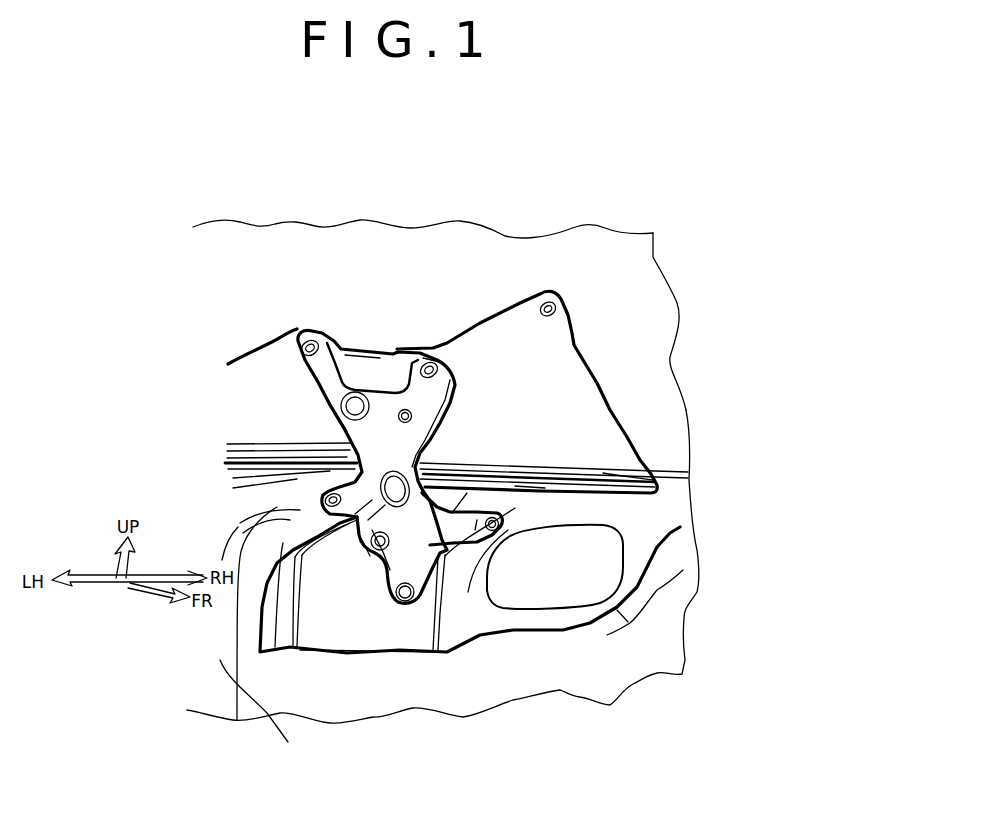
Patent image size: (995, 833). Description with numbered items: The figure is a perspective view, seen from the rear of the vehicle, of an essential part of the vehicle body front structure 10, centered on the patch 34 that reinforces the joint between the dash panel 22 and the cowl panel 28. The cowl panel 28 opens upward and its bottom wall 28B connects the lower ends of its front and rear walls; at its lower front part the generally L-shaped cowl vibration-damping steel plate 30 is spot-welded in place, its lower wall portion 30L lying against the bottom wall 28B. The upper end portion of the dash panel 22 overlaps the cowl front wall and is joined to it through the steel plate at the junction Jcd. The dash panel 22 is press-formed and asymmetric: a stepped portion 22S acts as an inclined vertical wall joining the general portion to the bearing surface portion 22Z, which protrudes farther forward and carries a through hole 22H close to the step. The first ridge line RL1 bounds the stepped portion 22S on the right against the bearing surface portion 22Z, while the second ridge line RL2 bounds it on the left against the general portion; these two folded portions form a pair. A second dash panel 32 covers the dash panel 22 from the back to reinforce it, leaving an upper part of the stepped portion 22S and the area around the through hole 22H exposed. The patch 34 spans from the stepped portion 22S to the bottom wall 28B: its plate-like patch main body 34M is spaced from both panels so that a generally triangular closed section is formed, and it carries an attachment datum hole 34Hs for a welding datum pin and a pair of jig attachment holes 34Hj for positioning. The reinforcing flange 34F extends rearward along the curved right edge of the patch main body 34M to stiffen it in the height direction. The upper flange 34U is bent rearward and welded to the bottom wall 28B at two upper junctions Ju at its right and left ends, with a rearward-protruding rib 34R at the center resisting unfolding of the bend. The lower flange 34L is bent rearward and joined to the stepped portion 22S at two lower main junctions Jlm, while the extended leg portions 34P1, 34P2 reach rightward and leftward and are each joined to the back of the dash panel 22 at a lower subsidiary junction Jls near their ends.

The vehicle body front structure 10 is at (700, 390).
The dash panel 22 is at (474, 624).
The through hole 22H is at (555, 567).
The stepped portion 22S is at (400, 635).
The bearing surface portion 22Z is at (571, 617).
The cowl panel 28 is at (677, 277).
The bottom wall 28B is at (430, 241).
The cowl vibration-damping steel plate 30 is at (589, 347).
The lower wall portion 30L is at (568, 404).
The second dash panel 32 is at (262, 660).
The patch 34 is at (464, 398).
The rib 34R is at (362, 368).
The upper flange 34U is at (450, 366).
The attachment datum hole 34Hs is at (412, 416).
The jig attachment holes 34Hj is at (341, 410).
The patch main body 34M is at (390, 442).
The reinforcing flange 34F is at (424, 463).
The extended leg portion 34P1 is at (522, 483).
The extended leg portion 34P2 is at (343, 486).
The lower flange 34L is at (357, 540).
The upper junctions Ju is at (300, 328).
The lower subsidiary junctions Jls is at (318, 497).
The lower main junctions Jlm is at (387, 570).
The junction Jcd is at (596, 487).
The first ridge line RL1 is at (505, 530).
The second ridge line RL2 is at (298, 602).